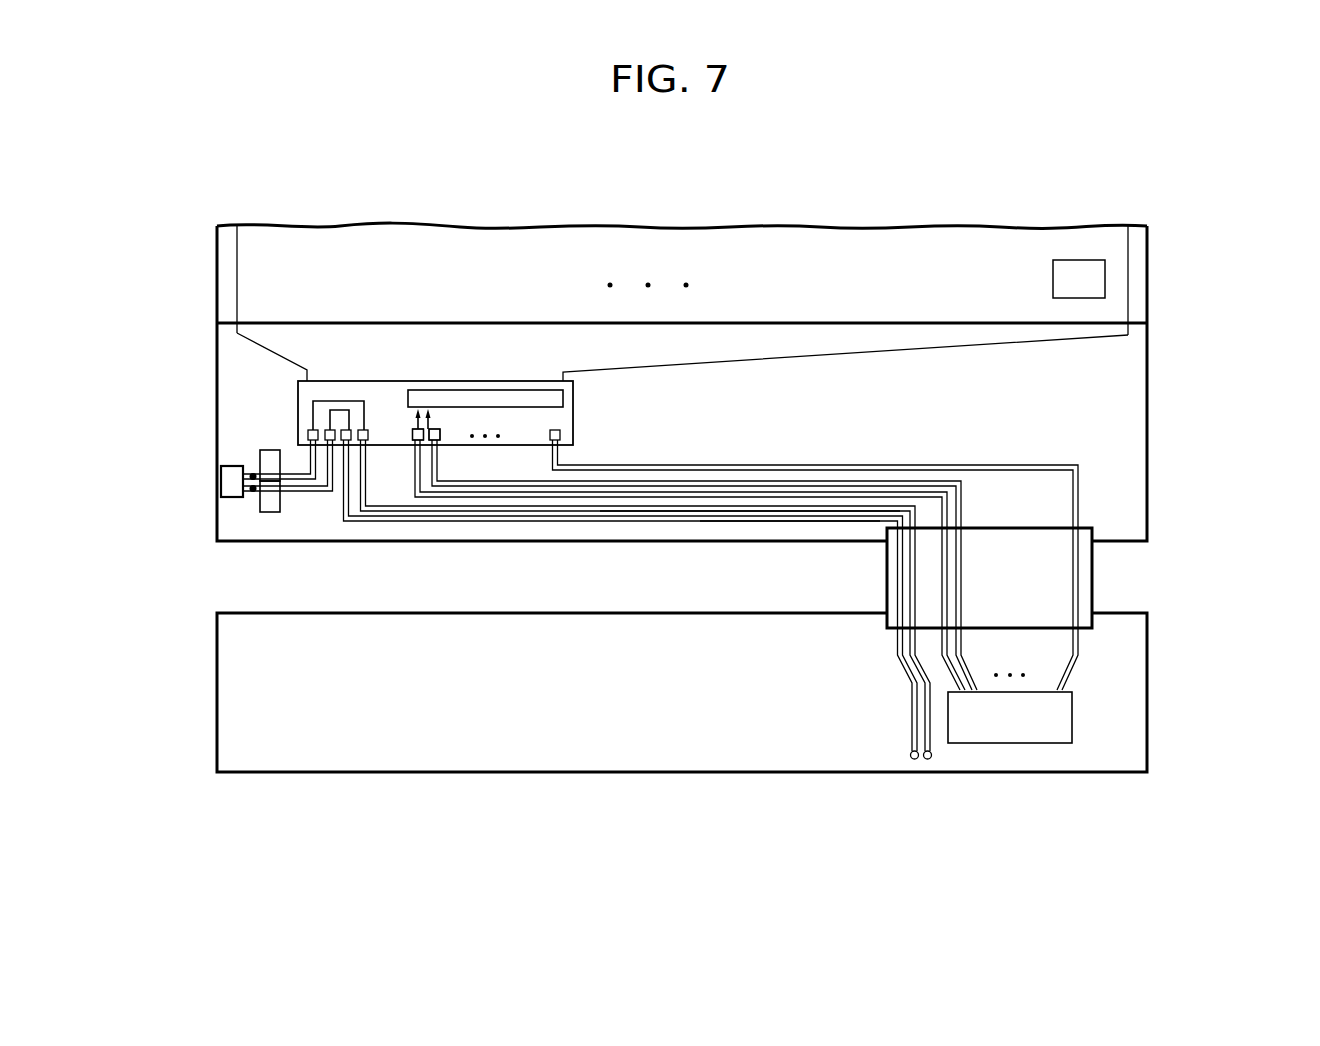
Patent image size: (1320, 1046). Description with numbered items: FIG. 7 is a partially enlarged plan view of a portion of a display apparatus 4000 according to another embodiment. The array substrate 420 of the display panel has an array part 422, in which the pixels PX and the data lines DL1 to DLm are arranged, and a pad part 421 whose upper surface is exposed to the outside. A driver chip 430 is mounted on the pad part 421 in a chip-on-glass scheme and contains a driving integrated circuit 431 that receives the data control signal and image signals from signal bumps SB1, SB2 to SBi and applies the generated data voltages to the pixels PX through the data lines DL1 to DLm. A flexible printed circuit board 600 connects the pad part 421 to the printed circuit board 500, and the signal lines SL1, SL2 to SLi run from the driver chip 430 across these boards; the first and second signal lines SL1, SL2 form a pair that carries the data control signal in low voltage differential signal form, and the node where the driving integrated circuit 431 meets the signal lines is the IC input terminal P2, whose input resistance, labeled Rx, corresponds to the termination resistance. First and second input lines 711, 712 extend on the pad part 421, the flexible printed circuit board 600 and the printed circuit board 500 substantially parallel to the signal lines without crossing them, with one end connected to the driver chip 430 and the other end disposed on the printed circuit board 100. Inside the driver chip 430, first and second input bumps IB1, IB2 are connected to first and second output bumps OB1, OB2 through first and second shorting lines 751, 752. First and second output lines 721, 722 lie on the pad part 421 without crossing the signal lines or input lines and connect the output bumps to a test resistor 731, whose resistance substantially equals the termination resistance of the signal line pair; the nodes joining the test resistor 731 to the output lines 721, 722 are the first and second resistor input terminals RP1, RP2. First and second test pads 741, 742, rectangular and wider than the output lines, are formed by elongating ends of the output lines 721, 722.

The display apparatus 4000 is at (1051, 180).
The array substrate 420 is at (1225, 277).
The pad part 421 is at (1138, 371).
The array part 422 is at (1135, 283).
The driver chip 430 is at (540, 381).
The driving integrated circuit 431 is at (496, 390).
The printed circuit board 500 is at (1150, 688).
The flexible printed circuit board 600 is at (1093, 573).
The printed circuit board 100 is at (1012, 743).
The first input line 711 is at (714, 511).
The second input line 712 is at (794, 522).
The first output line 721 is at (283, 450).
The second output line 722 is at (302, 455).
The test resistor 731 is at (220, 481).
The first test pad 741 is at (268, 450).
The second test pad 742 is at (279, 478).
The first shorting line 751 is at (338, 410).
The second shorting line 752 is at (330, 400).
The data line DLm is at (216, 252).
The data line DL1 is at (1150, 252).
The pixel PX is at (1079, 279).
The first input bump IB1 is at (369, 430).
The second input bump IB2 is at (340, 410).
The first output bump OB1 is at (309, 431).
The second output bump OB2 is at (324, 431).
The IC input terminal P2 is at (413, 421).
The first resistor input terminal RP1 is at (259, 462).
The second resistor input terminal RP2 is at (259, 496).
The receiving terminal Rx is at (417, 424).
The signal bump SB1 is at (441, 441).
The signal bump SB2 is at (441, 436).
The signal bump SBi is at (560, 441).
The first signal line SL1 is at (948, 513).
The second signal line SL2 is at (965, 490).
The signal line SLi is at (1042, 466).